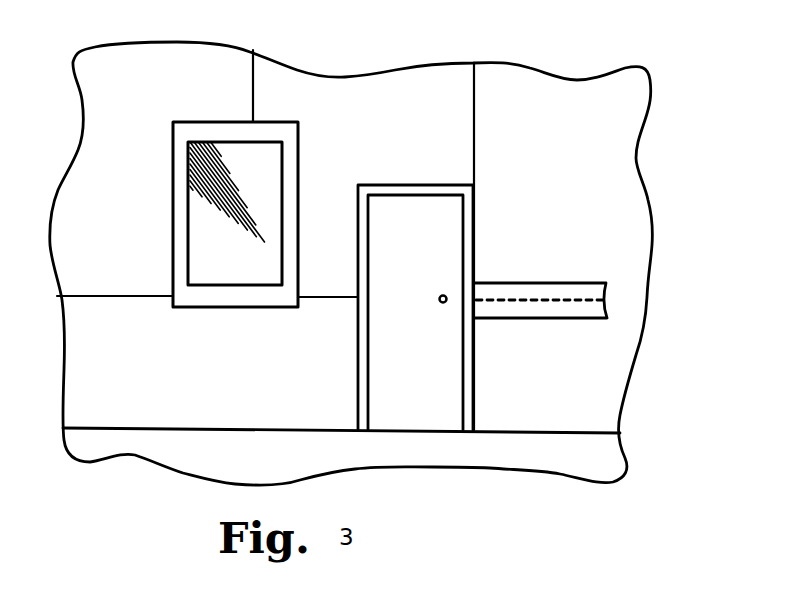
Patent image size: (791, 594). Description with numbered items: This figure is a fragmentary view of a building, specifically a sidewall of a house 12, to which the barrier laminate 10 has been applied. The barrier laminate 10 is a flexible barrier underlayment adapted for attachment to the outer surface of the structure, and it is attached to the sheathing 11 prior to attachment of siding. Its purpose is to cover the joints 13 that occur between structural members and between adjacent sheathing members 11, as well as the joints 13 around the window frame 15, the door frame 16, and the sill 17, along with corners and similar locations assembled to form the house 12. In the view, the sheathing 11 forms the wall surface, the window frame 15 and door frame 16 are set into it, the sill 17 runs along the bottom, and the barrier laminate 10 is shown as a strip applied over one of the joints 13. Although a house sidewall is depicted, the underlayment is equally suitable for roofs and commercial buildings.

The barrier laminate 10 is at (535, 287).
The sheathing 11 is at (240, 60).
The house 12 is at (633, 154).
The joints 13 is at (253, 108).
The window frame 15 is at (180, 204).
The door frame 16 is at (445, 187).
The sill 17 is at (375, 453).